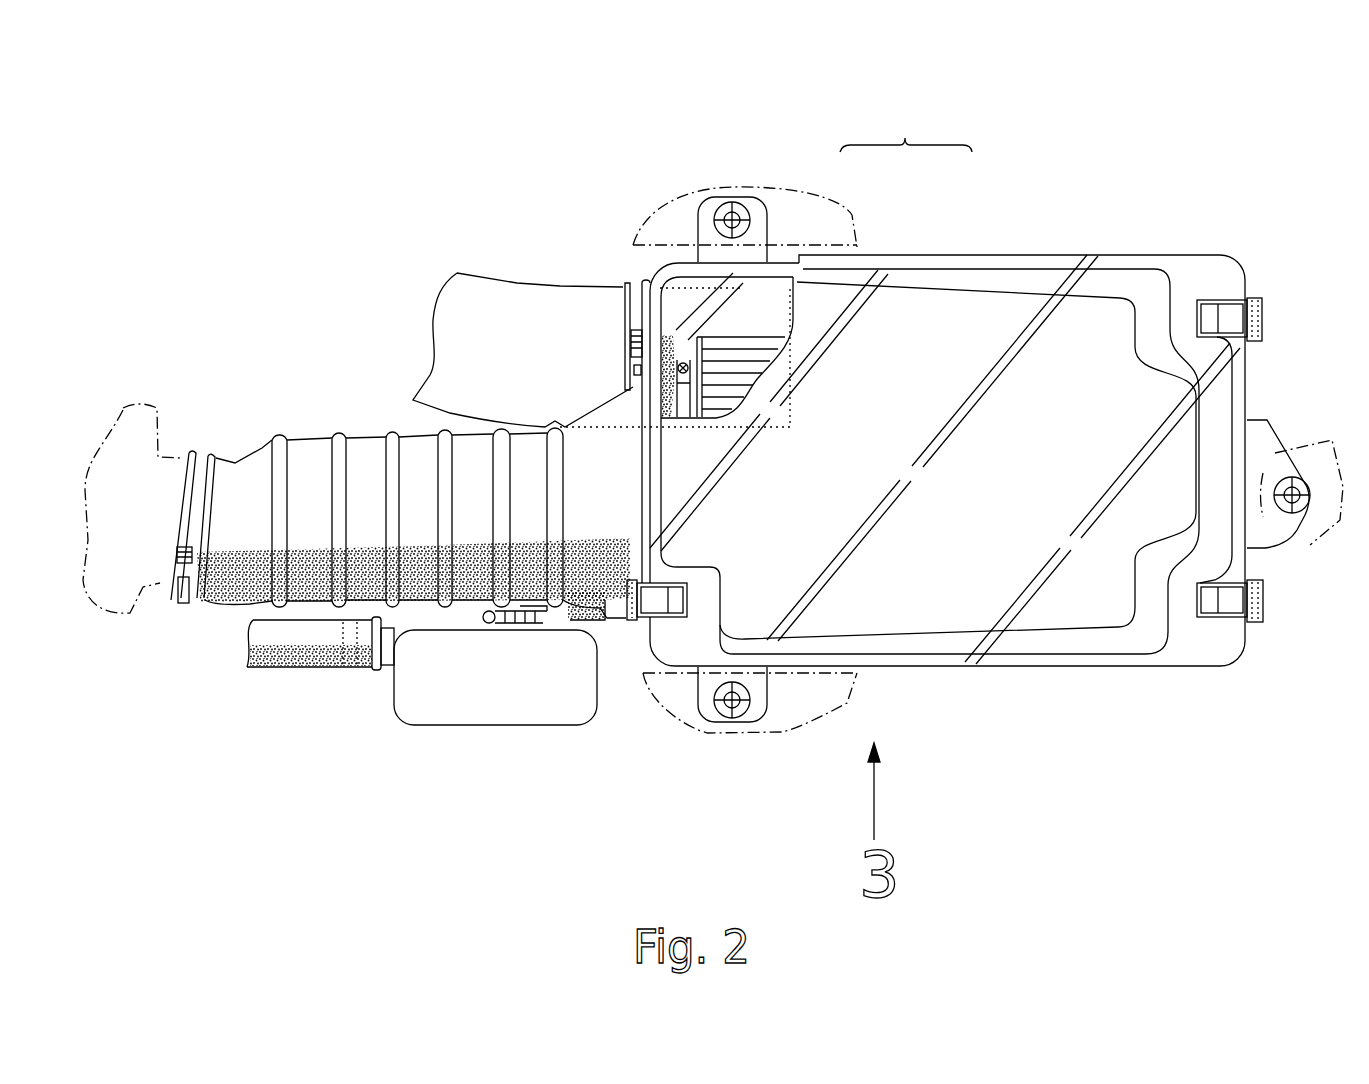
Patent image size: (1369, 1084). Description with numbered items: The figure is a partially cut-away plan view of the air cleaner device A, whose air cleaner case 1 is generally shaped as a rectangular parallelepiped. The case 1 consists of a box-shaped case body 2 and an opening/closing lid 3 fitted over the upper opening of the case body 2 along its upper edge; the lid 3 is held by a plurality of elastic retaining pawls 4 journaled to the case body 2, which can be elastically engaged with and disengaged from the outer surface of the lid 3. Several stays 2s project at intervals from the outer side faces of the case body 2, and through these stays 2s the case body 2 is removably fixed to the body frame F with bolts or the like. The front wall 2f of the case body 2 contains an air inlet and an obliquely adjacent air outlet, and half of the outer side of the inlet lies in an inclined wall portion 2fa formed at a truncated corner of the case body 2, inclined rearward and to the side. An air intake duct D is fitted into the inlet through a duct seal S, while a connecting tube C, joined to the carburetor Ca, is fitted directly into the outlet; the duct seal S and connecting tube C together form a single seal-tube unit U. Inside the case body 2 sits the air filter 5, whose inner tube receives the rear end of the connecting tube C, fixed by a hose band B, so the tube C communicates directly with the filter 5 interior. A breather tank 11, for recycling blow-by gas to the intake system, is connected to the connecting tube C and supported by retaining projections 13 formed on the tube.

The air cleaner case 1 is at (906, 127).
The case body 2 is at (787, 273).
The opening/closing lid 3 is at (1013, 250).
The elastic retaining pawls 4 is at (1227, 317).
The air filter 5 is at (727, 368).
The stays 2s is at (757, 223).
The front wall 2f is at (627, 388).
The inclined wall portion 2fa is at (735, 310).
The breather tank 11 is at (448, 700).
The retaining projections 13 is at (583, 623).
The air cleaner device A is at (1140, 225).
The hose band B is at (640, 287).
The connecting tube C is at (310, 440).
The air intake duct D is at (517, 287).
The body frame F is at (717, 180).
The duct seal S is at (722, 312).
The seal-tube unit U is at (403, 422).
The carburetor Ca is at (145, 427).